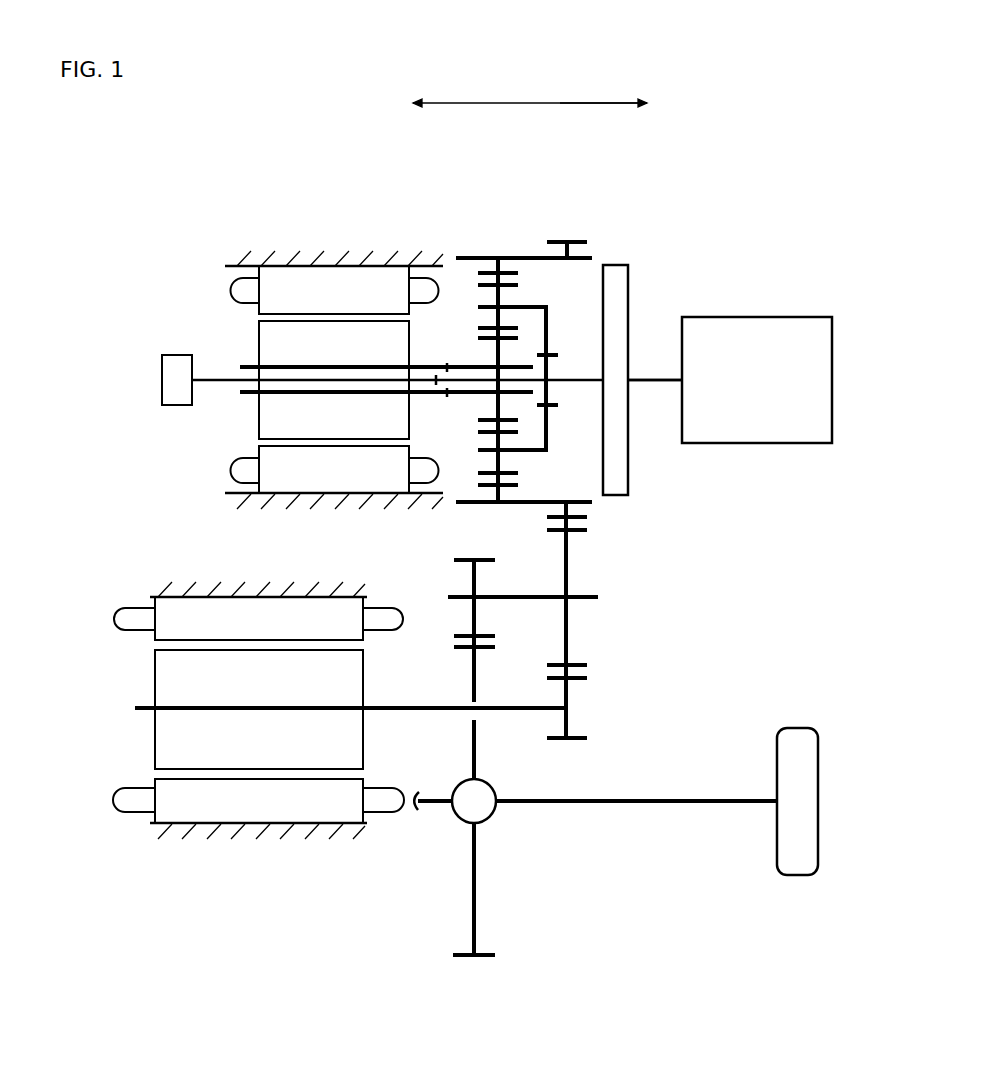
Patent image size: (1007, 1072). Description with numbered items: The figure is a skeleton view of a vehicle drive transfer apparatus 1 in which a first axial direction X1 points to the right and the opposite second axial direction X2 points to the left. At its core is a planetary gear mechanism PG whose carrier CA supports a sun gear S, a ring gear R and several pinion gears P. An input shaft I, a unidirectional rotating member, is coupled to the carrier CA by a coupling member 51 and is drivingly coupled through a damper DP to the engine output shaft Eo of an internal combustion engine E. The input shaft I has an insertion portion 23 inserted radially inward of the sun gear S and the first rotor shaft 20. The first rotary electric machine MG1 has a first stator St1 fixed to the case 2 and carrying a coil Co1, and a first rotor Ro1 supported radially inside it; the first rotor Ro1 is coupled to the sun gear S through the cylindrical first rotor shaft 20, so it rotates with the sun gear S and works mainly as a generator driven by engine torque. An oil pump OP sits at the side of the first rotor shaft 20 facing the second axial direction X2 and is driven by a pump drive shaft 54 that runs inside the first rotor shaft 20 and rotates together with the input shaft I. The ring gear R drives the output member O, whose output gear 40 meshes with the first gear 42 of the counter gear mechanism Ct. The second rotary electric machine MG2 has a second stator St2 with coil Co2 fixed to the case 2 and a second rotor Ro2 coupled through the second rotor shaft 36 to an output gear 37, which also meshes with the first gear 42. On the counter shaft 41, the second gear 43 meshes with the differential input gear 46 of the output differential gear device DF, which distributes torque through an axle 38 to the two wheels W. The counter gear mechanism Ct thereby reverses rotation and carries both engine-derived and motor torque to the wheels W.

The vehicle drive transfer apparatus 1 is at (315, 160).
The first axial direction X1 is at (619, 104).
The second axial direction X2 is at (515, 104).
The first rotary electric machine MG1 is at (283, 245).
The first stator St1 is at (305, 272).
The coil Co1 is at (232, 290).
The first rotor Ro1 is at (262, 333).
The first rotor shaft 20 is at (365, 366).
The pump drive shaft 54 is at (283, 383).
The oil pump OP is at (165, 375).
The insertion portion 23 is at (470, 395).
The input shaft I is at (575, 385).
The case 2 is at (270, 505).
The planetary gear mechanism PG is at (538, 222).
The ring gear R is at (508, 270).
The output member O is at (480, 258).
The pinion gear P is at (508, 297).
The sun gear S is at (478, 345).
The carrier CA is at (548, 322).
The coupling member 51 is at (552, 366).
The damper DP is at (615, 265).
The internal combustion engine E is at (806, 317).
The engine output shaft Eo is at (652, 380).
The counter gear mechanism Ct is at (595, 557).
The output gear 40 is at (588, 519).
The counter shaft 41 is at (512, 597).
The first gear 42 is at (568, 618).
The output gear 37 is at (568, 694).
The second gear 43 is at (470, 578).
The differential input gear 46 is at (472, 670).
The second rotor shaft 36 is at (424, 712).
The output differential gear device DF is at (490, 820).
The axle 38 is at (640, 805).
The wheels W is at (793, 737).
The second rotary electric machine MG2 is at (210, 568).
The second stator St2 is at (218, 612).
The second coil end Co2 is at (125, 607).
The second rotor Ro2 is at (160, 673).